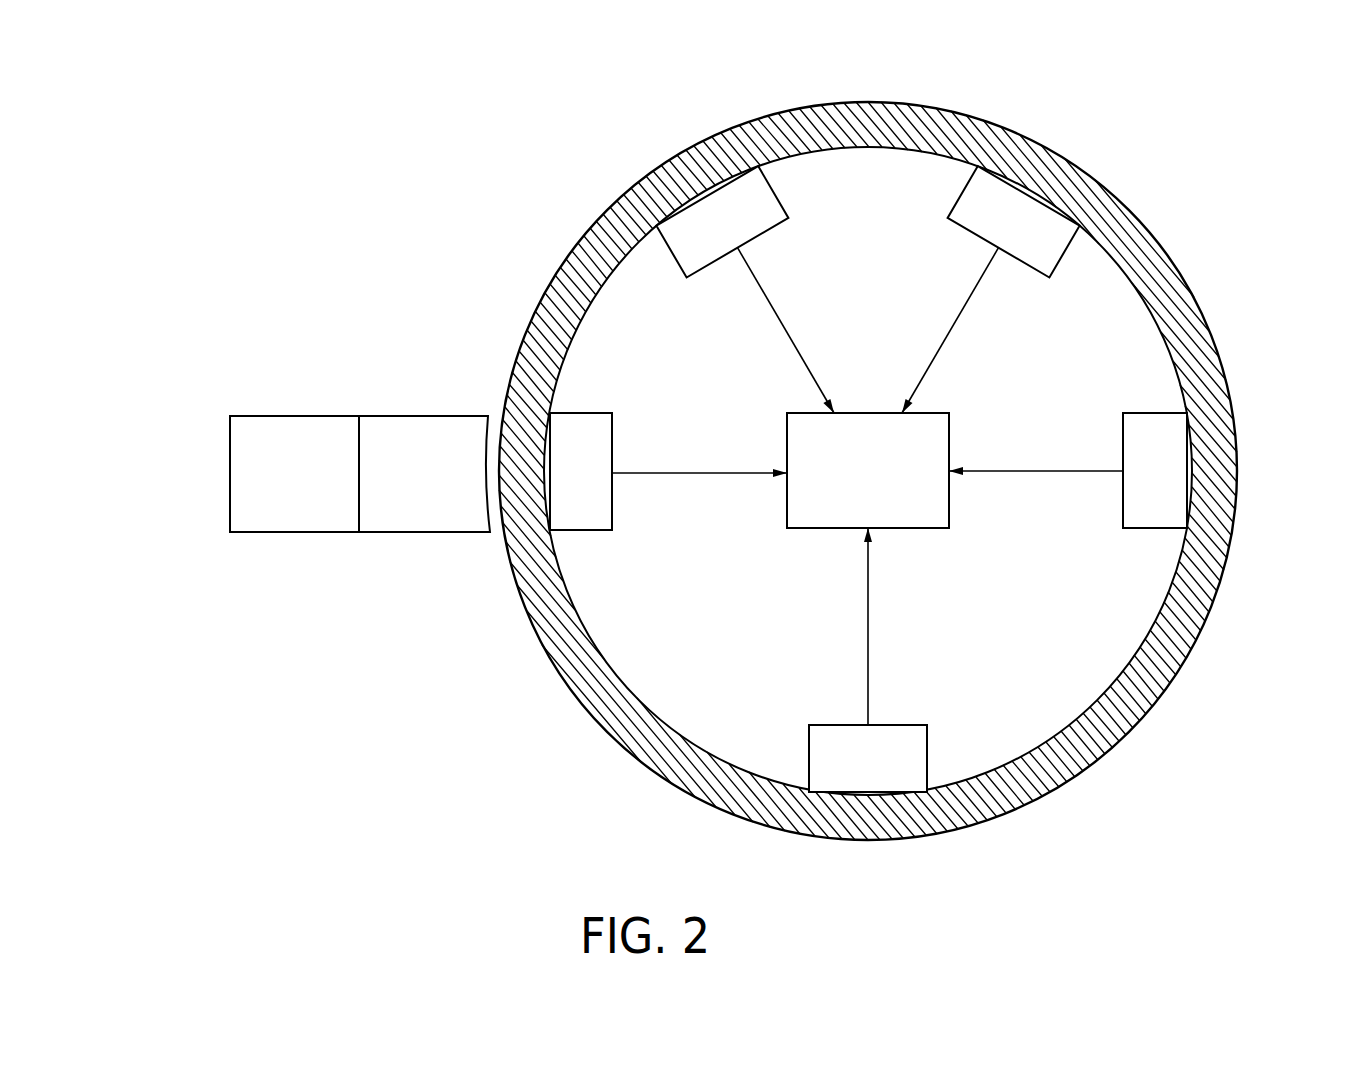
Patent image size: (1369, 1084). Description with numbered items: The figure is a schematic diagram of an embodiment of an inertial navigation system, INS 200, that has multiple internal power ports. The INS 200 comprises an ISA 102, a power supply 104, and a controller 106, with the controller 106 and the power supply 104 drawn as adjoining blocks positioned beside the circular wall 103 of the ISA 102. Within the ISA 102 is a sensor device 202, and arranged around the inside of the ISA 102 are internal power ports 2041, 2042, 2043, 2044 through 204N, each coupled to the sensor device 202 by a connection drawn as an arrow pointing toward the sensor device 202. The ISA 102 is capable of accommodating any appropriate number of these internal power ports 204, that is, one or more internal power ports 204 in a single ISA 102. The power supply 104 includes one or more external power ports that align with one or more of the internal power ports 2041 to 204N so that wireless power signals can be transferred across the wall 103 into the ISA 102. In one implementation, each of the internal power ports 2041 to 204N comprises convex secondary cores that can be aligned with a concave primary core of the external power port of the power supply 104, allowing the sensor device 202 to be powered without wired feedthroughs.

The INS 200 is at (198, 205).
The ISA 102 is at (1212, 642).
The pipe wall 103 is at (850, 120).
The power supply 104 is at (448, 520).
The controller 106 is at (320, 514).
The sensor device 202 is at (898, 509).
The internal power ports 204 is at (868, 479).
The first internal power port 2041 is at (612, 515).
The second internal power port 2042 is at (773, 232).
The third internal power port 2043 is at (1035, 278).
The fourth internal power port 2044 is at (1123, 512).
The Nth internal power port 204N is at (912, 725).